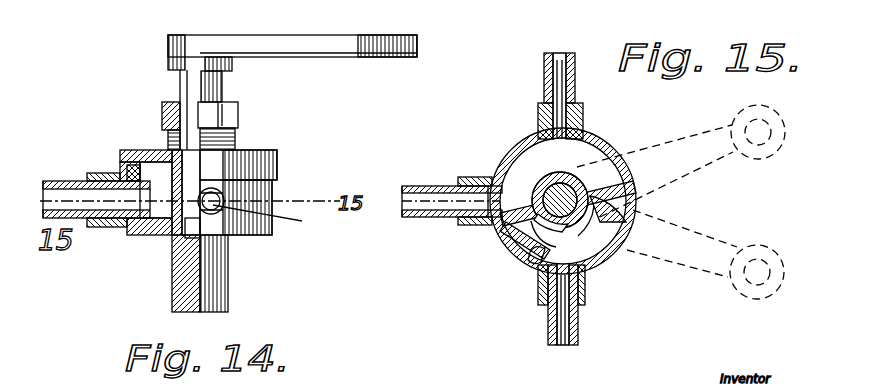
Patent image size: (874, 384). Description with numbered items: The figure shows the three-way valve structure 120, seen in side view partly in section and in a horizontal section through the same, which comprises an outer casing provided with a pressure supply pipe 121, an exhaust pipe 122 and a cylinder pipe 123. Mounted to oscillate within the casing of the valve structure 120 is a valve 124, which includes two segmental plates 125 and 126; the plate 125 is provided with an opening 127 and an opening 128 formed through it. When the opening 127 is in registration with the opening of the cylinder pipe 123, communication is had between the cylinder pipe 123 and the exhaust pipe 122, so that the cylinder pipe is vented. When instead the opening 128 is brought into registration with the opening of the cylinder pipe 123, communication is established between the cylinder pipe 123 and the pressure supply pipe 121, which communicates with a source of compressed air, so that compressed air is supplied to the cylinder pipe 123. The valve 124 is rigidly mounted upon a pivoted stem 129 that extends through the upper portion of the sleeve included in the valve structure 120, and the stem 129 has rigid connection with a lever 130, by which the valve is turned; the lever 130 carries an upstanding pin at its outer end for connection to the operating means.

In FIG. 14, the three-way valve structure 120 is at (275, 189).
In FIG. 15, the three-way valve structure 120 is at (575, 190).
In FIG. 14, the pressure supply pipe 121 is at (278, 221).
In FIG. 15, the pressure supply pipe 121 is at (560, 328).
In FIG. 15, the exhaust pipe 122 is at (537, 96).
In FIG. 14, the cylinder pipe 123 is at (71, 207).
In FIG. 15, the cylinder pipe 123 is at (423, 187).
In FIG. 15, the valve 124 is at (550, 246).
In FIG. 14, the segmental plate 125 is at (145, 170).
In FIG. 15, the segmental plate 125 is at (528, 268).
In FIG. 15, the segmental plate 126 is at (638, 212).
In FIG. 14, the opening 127 is at (150, 207).
In FIG. 15, the opening 127 is at (497, 205).
In FIG. 15, the opening 128 is at (533, 254).
In FIG. 14, the pivoted stem 129 is at (212, 96).
In FIG. 15, the pivoted stem 129 is at (564, 195).
In FIG. 14, the lever 130 is at (292, 37).
In FIG. 15, the lever 130 is at (735, 152).